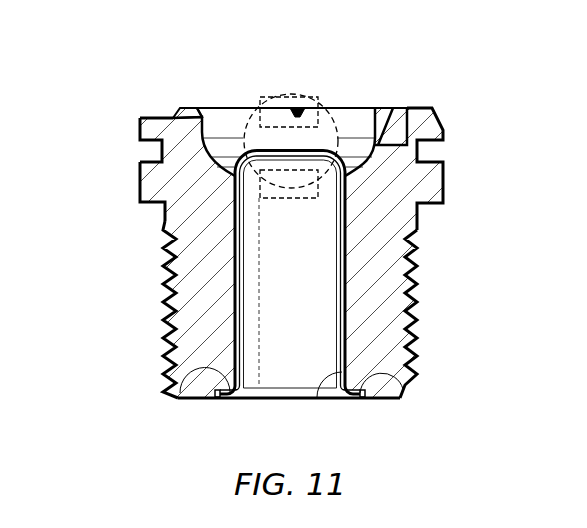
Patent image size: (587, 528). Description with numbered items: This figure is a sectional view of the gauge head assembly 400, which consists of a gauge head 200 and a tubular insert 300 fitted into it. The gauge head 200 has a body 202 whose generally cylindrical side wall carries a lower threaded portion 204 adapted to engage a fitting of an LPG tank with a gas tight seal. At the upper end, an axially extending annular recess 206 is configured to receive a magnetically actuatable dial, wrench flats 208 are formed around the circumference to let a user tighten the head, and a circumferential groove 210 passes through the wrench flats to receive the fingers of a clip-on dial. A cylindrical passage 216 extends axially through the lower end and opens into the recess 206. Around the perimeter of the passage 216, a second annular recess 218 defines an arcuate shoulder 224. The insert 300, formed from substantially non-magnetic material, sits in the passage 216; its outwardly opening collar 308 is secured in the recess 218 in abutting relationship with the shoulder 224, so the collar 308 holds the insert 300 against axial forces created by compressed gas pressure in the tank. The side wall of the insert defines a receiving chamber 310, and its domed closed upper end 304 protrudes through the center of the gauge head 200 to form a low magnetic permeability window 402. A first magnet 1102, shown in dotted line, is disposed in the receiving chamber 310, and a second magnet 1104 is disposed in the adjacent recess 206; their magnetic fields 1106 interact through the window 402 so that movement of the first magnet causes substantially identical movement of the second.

The gauge head 200 is at (452, 121).
The body 202 is at (422, 233).
The lower threaded portion 204 is at (163, 264).
The annular recess 206 is at (212, 114).
The wrench flats 208 is at (140, 172).
The circumferential groove 210 is at (140, 142).
The cylindrical passage 216 is at (313, 399).
The annular recess 218 is at (417, 381).
The shoulder 224 is at (172, 382).
The tubular insert 300 is at (226, 337).
The closed upper end 304 is at (339, 137).
The collar 308 is at (352, 399).
The receiving chamber 310 is at (307, 302).
The gauge head assembly 400 is at (155, 77).
The low magnetic permeability window 402 is at (279, 112).
The first magnet 1102 is at (291, 199).
The second magnet 1104 is at (310, 95).
The magnetic fields 1106 is at (234, 105).